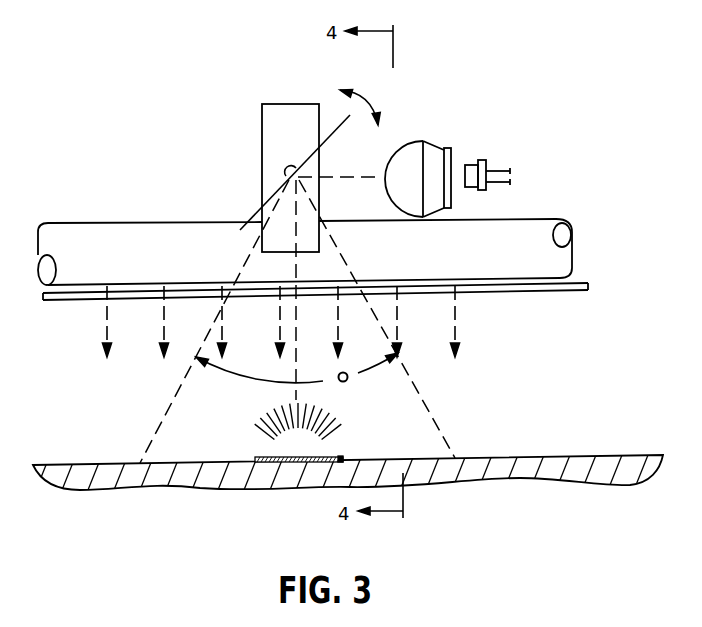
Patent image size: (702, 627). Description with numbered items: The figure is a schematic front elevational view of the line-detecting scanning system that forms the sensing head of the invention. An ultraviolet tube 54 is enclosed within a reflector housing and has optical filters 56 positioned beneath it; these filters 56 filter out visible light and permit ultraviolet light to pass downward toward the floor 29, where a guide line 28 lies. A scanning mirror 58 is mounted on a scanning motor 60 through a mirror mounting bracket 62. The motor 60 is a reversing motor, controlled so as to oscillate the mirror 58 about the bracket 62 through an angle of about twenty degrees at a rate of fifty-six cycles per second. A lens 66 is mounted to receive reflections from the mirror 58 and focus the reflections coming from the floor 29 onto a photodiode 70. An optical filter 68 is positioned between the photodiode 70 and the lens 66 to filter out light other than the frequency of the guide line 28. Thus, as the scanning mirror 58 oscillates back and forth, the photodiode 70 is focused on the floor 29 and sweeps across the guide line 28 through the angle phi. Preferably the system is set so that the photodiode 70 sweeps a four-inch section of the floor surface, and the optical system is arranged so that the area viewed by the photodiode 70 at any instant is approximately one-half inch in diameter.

The guide line 28 is at (257, 458).
The floor 29 is at (537, 458).
The ultraviolet tube 54 is at (530, 228).
The optical filters 56 is at (538, 293).
The scanning mirror 58 is at (253, 219).
The scanning motor 60 is at (283, 103).
The mirror mounting bracket 62 is at (289, 169).
The lens 66 is at (408, 145).
The optical filter 68 is at (450, 150).
The photodiode 70 is at (480, 163).